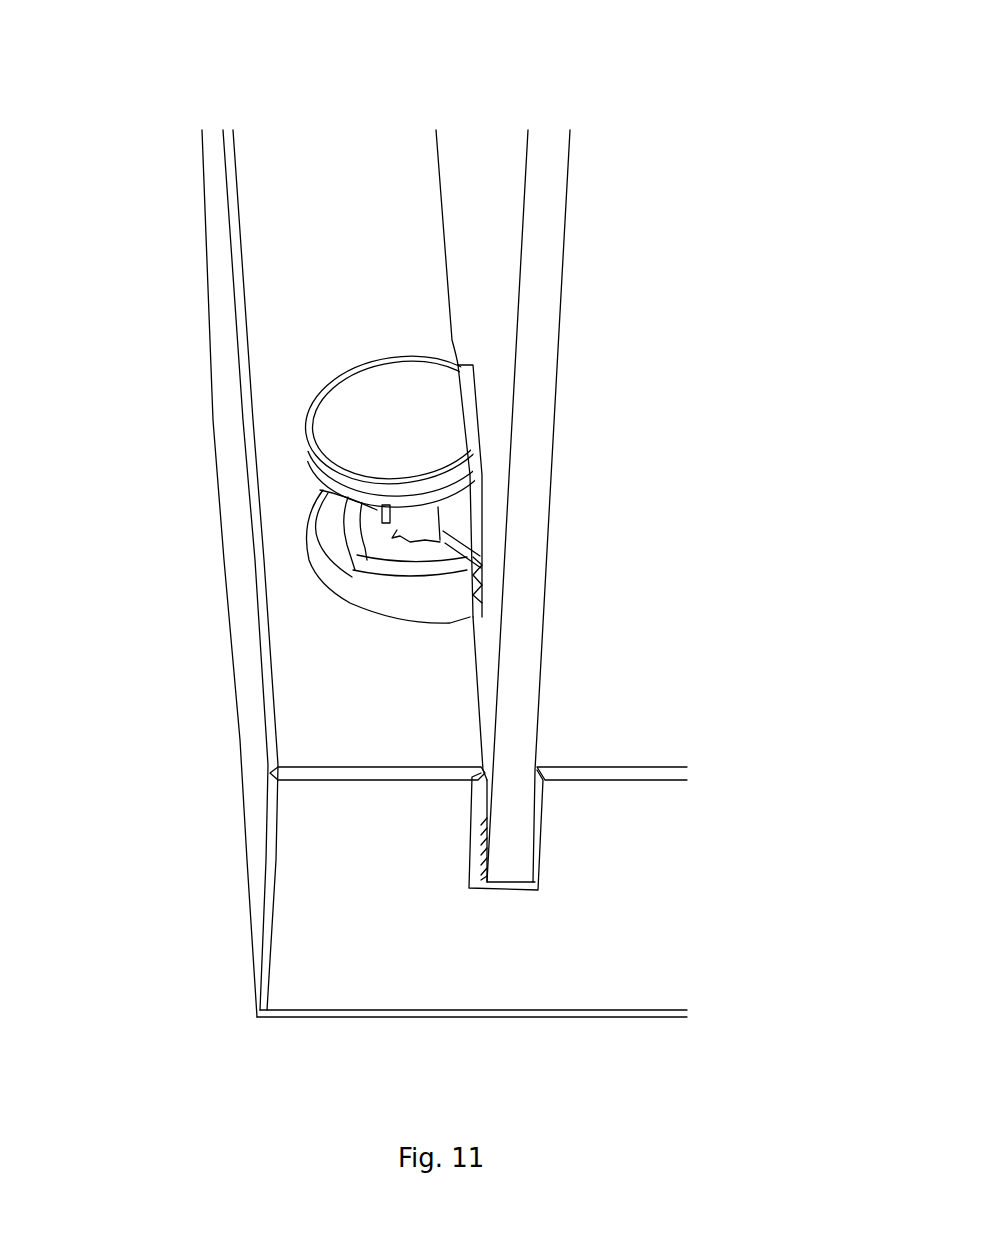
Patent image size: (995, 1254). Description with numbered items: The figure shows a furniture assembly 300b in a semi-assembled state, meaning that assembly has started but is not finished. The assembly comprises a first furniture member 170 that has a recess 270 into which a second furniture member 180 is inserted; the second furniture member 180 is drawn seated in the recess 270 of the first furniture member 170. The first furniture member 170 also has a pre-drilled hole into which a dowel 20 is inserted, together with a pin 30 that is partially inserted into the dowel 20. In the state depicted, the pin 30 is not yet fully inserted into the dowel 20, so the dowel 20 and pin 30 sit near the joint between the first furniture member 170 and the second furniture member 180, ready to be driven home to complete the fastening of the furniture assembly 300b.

The furniture assembly 300b is at (88, 75).
The first furniture member 170 is at (298, 727).
The second furniture member 180 is at (552, 152).
The recess 270 is at (478, 876).
The pin 30 is at (363, 413).
The dowel 20 is at (333, 573).